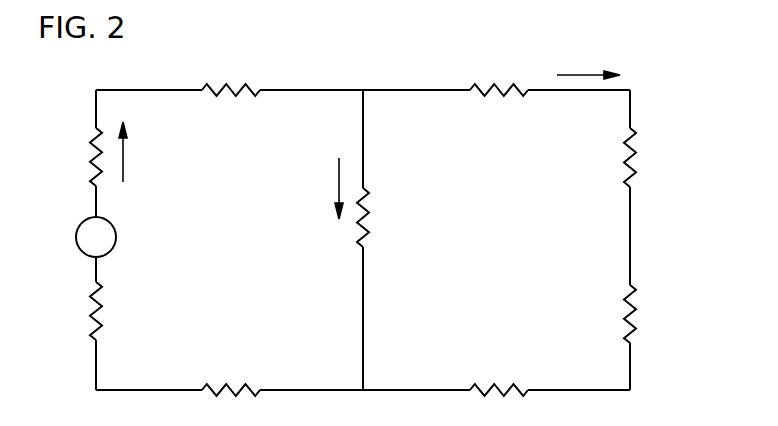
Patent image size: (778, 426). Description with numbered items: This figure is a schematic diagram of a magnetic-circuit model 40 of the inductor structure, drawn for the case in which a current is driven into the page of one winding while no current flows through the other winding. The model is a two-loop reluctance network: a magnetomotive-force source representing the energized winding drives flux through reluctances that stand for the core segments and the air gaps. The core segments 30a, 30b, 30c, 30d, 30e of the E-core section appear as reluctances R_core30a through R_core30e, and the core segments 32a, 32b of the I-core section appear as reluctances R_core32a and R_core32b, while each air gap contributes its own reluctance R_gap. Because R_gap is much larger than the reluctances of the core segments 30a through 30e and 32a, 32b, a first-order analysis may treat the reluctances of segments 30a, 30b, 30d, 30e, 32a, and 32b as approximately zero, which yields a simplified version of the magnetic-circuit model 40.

The magnetic-circuit model 40 is at (365, 71).
The core segment 30a is at (140, 311).
The core segment 30b is at (226, 373).
The core segment 30c is at (408, 217).
The core segment 30d is at (491, 373).
The core segment 30e is at (673, 314).
The core segment 32a is at (231, 75).
The core segment 32b is at (499, 74).